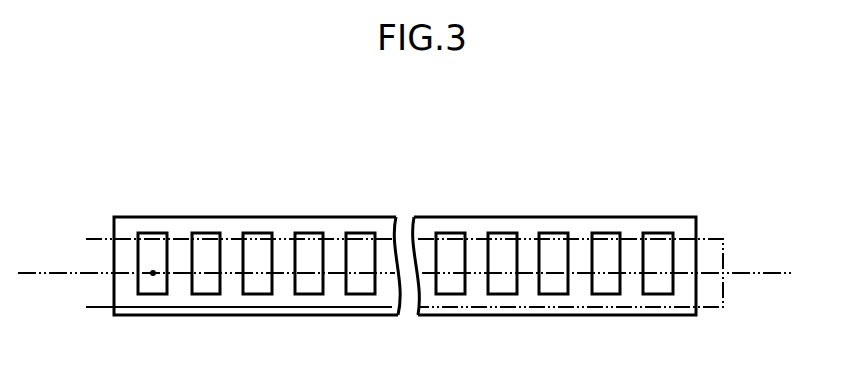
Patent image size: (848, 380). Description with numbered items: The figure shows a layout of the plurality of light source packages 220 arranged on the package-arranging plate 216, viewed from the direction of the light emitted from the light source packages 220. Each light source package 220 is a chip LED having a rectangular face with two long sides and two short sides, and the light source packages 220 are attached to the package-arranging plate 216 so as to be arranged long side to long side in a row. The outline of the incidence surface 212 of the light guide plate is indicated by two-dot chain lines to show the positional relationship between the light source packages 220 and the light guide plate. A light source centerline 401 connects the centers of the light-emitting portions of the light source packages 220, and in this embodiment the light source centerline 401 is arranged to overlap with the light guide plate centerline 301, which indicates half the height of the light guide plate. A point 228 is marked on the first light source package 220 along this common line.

The package-arranging plate 216 is at (184, 226).
The incidence surface 212 is at (718, 240).
The light guide plate centerline 301 is at (764, 272).
The light source centerline 401 is at (764, 272).
The light source package 220 is at (202, 282).
The reference point on axis 228 is at (153, 276).